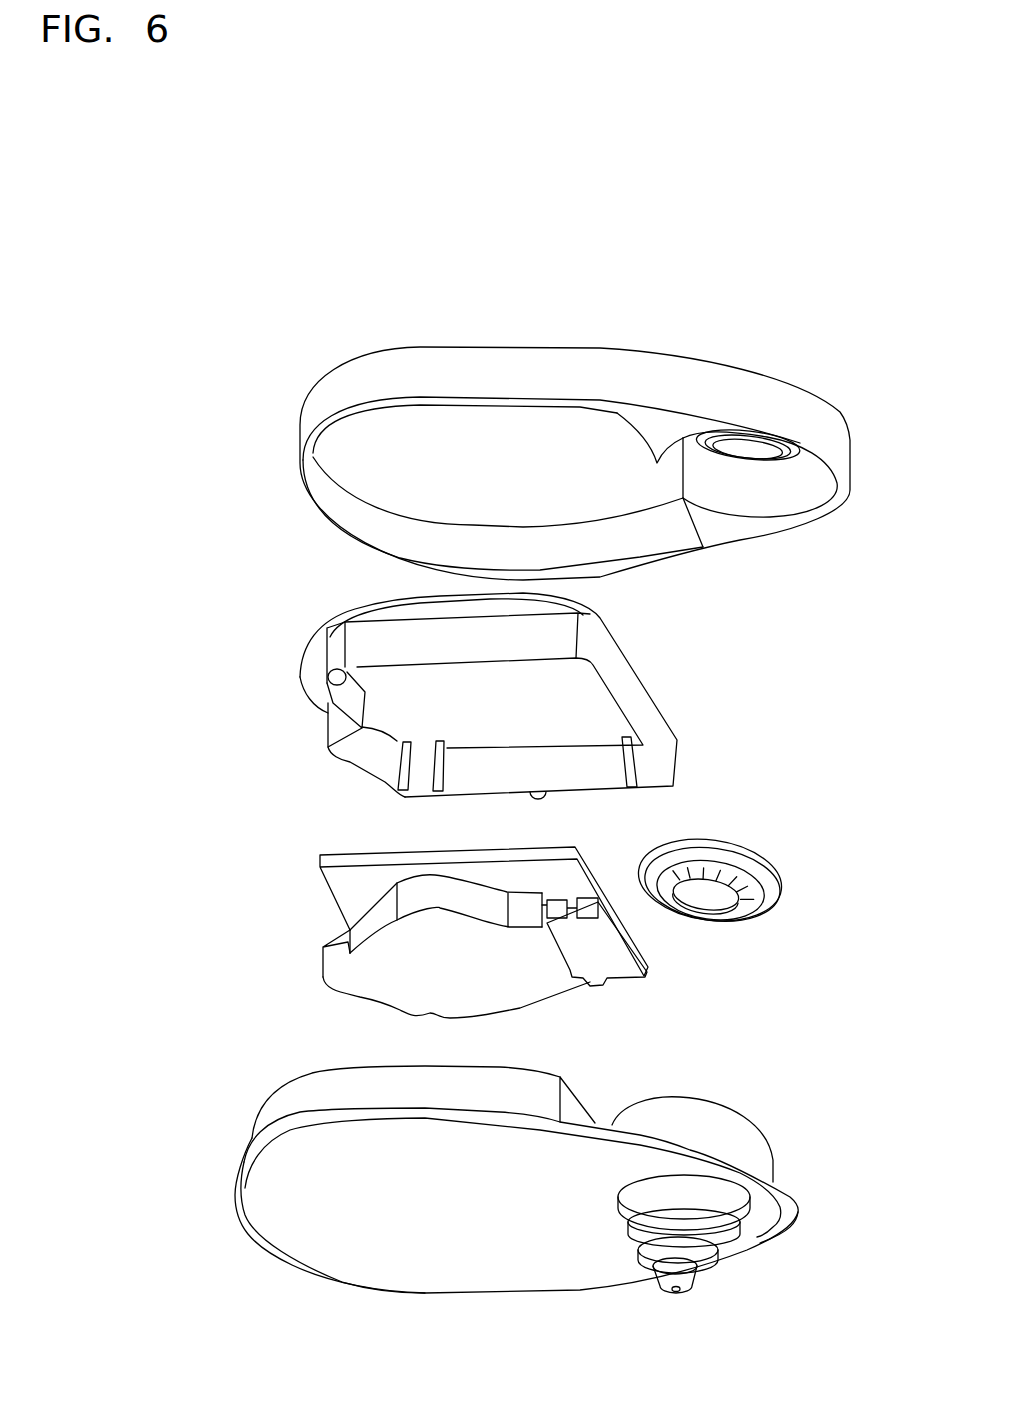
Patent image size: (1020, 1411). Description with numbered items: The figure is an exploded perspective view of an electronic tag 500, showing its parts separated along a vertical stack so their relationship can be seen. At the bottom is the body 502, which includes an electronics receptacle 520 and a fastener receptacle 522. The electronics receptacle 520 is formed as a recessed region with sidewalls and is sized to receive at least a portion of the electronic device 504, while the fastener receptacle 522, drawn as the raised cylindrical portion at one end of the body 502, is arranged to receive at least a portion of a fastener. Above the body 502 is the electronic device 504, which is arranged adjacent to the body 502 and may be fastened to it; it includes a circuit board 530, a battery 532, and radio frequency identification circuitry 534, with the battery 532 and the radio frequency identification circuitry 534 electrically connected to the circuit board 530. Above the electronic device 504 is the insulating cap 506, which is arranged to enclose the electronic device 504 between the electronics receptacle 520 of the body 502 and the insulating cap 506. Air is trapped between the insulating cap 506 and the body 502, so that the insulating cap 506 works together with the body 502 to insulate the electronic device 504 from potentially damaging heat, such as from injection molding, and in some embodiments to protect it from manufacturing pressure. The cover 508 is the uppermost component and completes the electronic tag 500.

The electronic tag 500 is at (770, 280).
The body 502 is at (252, 1138).
The electronic device 504 is at (337, 942).
The insulating cap 506 is at (312, 680).
The cover 508 is at (300, 462).
The electronics receptacle 520 is at (310, 1073).
The fastener receptacle 522 is at (727, 1100).
The circuit board 530 is at (362, 858).
The battery 532 is at (517, 992).
The radio frequency identification circuitry 534 is at (605, 955).